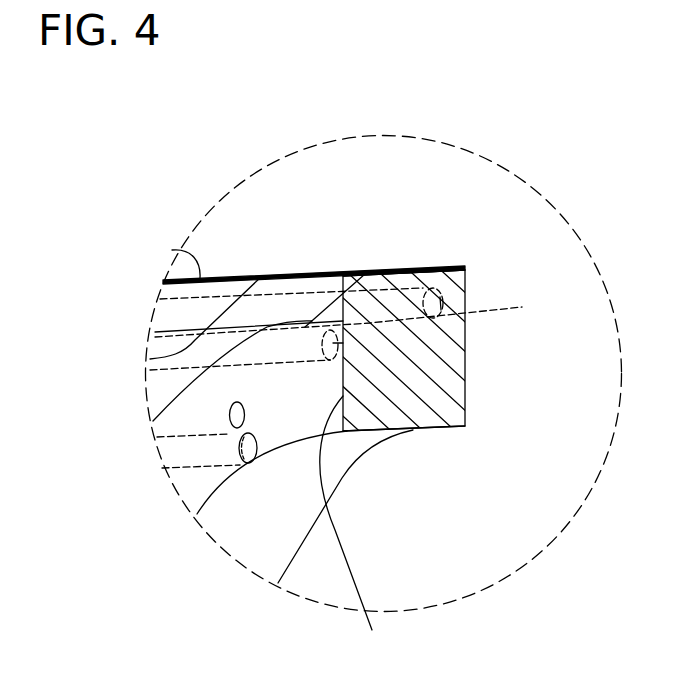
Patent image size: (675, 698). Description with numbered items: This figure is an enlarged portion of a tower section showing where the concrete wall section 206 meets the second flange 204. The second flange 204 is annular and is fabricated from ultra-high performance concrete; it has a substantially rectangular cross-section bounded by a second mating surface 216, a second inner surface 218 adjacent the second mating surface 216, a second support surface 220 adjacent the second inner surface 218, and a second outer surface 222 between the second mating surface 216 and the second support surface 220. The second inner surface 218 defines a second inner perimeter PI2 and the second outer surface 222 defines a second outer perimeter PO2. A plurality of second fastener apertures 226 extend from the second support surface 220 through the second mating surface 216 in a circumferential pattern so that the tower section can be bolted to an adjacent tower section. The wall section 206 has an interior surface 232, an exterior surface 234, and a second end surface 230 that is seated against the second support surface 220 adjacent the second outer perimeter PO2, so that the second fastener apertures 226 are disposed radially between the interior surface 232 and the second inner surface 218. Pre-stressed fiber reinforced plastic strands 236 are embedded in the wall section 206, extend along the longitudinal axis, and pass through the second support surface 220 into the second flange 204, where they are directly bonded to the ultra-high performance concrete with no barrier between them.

The second flange 204 is at (342, 224).
The wall section 206 is at (163, 284).
The second mating surface 216 is at (465, 377).
The second inner surface 218 is at (455, 428).
The second support surface 220 is at (295, 527).
The second outer surface 222 is at (407, 268).
The second fastener apertures 226 is at (229, 416).
The second end surface 230 is at (343, 300).
The interior surface 232 is at (150, 359).
The exterior surface 234 is at (172, 250).
The FRP strands 236 is at (338, 345).
The second outer perimeter PO2 is at (384, 270).
The second inner perimeter PI2 is at (342, 478).